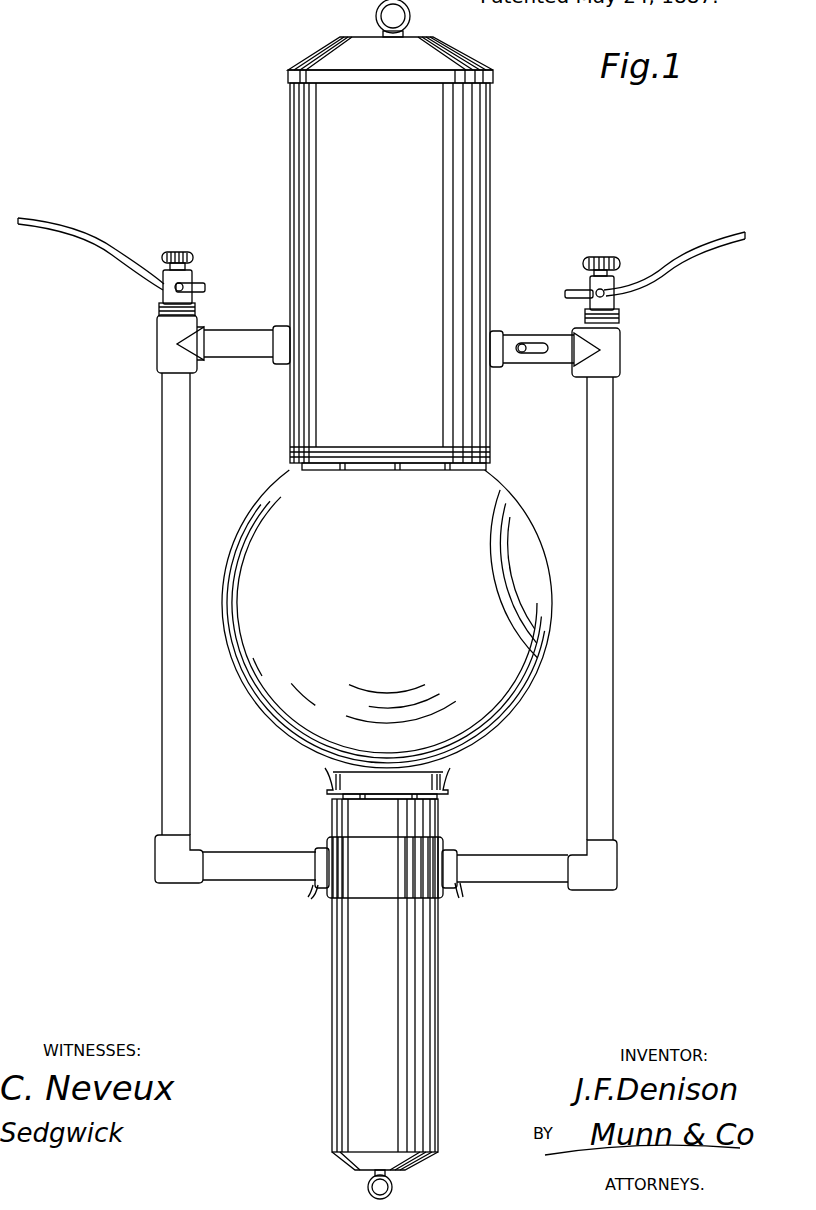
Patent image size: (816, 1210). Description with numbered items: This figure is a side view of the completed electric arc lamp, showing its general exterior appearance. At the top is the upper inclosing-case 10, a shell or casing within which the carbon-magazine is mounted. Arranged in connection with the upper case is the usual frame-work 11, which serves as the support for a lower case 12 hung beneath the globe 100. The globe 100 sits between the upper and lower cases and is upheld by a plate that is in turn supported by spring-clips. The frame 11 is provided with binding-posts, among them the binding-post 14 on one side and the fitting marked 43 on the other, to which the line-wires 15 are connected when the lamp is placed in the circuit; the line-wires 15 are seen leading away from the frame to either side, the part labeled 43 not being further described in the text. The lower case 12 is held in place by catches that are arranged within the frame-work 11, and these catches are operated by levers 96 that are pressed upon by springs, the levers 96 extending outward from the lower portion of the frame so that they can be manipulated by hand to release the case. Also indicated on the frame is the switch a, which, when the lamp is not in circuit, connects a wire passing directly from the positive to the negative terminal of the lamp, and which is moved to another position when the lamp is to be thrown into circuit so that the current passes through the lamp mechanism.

The upper inclosing-case 10 is at (390, 235).
The globe 100 is at (387, 634).
The lower case 12 is at (385, 999).
The frame-work 11 is at (387, 602).
The binding-post 14 is at (186, 286).
The right valve 43 is at (587, 290).
The line-wires 15 is at (381, 253).
The switch a is at (545, 325).
The levers 96 is at (310, 896).